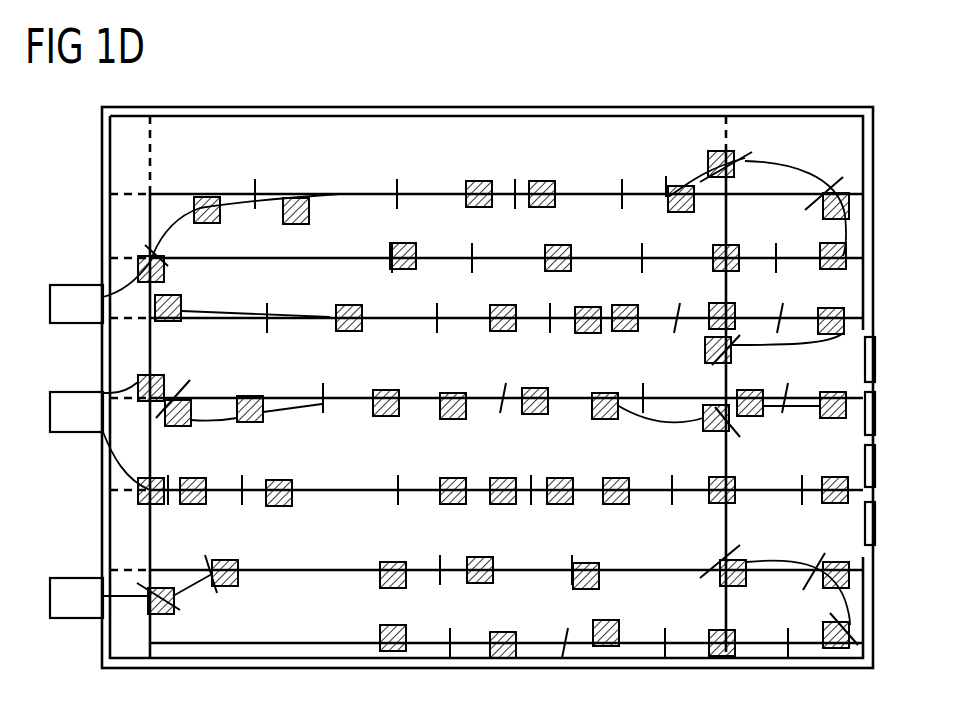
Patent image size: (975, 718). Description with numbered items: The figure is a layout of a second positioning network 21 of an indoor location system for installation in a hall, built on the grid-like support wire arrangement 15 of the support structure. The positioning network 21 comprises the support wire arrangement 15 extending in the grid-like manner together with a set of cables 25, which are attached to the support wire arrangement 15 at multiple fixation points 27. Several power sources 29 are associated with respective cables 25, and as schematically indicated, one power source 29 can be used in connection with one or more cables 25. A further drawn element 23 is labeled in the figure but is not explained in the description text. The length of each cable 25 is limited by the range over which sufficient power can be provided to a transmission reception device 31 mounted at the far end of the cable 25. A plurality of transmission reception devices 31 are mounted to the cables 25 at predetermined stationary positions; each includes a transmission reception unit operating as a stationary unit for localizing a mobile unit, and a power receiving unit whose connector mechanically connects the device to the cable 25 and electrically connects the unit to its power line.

The support wire arrangement 15 is at (150, 215).
The positioning network 21 is at (228, 184).
The jumper cable 23 is at (772, 191).
The cables 25 is at (346, 194).
The fixation points 27 is at (399, 194).
The power sources 29 is at (70, 284).
The transmission reception device 31 is at (846, 252).